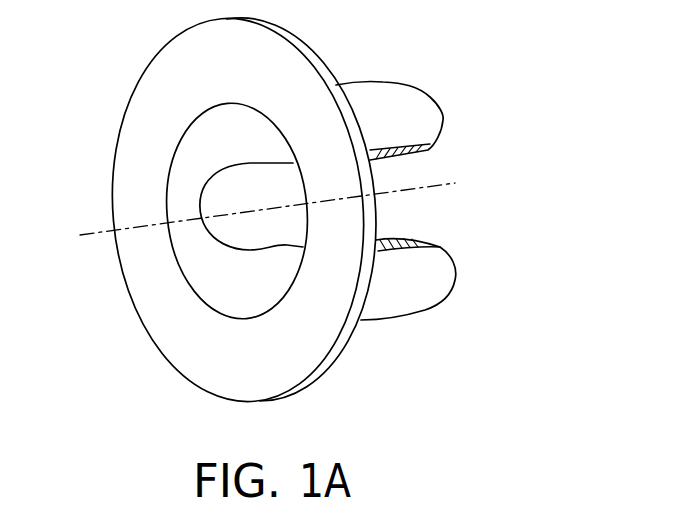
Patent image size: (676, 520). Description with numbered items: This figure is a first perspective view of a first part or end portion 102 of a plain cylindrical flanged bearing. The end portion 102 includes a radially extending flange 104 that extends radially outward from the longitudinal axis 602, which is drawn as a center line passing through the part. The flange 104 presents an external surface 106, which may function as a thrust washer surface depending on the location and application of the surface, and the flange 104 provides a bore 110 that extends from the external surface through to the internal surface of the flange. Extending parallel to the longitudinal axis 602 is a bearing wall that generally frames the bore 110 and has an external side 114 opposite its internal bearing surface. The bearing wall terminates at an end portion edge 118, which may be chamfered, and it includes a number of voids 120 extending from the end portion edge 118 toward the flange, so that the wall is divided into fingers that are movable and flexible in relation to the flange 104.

The first part or end portion 102 is at (541, 76).
The radially extending flange 104 is at (200, 365).
The external surface 106 is at (285, 355).
The bore 110 is at (187, 160).
The external side 114 is at (423, 295).
The end portion edge 118 is at (438, 103).
The voids 120 is at (472, 235).
The longitudinal axis 602 is at (456, 182).